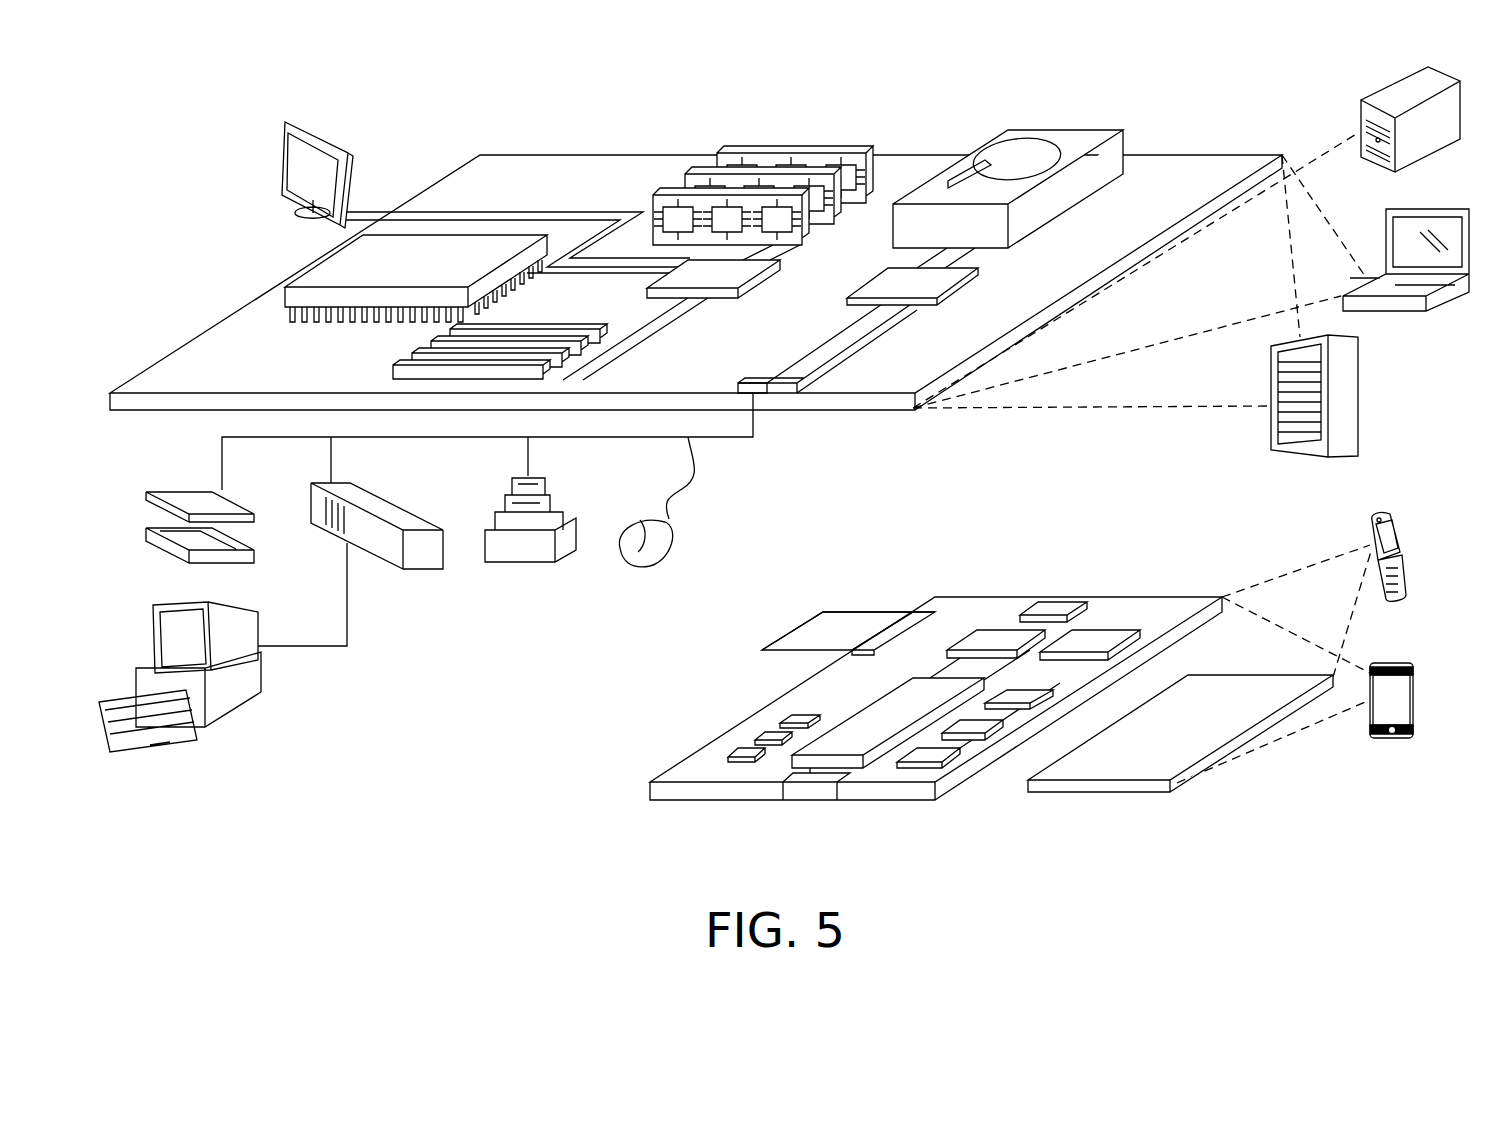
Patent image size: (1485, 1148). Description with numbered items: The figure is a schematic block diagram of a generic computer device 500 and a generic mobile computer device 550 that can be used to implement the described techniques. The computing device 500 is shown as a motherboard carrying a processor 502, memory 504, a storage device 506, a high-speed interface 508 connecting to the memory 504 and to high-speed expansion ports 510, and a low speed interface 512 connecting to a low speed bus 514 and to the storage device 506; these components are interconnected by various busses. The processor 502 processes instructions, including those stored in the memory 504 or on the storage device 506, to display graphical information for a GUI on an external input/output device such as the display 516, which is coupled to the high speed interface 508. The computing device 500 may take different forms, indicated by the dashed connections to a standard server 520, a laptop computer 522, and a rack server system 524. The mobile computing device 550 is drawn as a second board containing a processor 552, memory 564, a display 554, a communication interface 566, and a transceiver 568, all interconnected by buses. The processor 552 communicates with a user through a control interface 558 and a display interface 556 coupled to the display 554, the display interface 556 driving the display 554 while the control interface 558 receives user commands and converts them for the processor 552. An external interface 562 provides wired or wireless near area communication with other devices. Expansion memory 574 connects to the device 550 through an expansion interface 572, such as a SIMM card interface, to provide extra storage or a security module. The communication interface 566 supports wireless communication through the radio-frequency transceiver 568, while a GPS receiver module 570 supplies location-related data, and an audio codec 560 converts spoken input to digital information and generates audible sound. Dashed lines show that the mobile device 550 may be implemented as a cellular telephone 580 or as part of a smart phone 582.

The computing device 500 is at (430, 100).
The processor 502 is at (313, 265).
The memory 504 is at (800, 148).
The storage device 506 is at (1052, 130).
The high-speed interface 508 is at (726, 272).
The high-speed expansion ports 510 is at (420, 353).
The low speed interface 512 is at (883, 285).
The low speed bus 514 is at (760, 380).
The display 516 is at (286, 120).
The standard server 520 is at (1385, 97).
The laptop computer 522 is at (1447, 205).
The rack server system 524 is at (1360, 394).
The mobile computing device 550 is at (600, 808).
The processor 552 is at (853, 730).
The display 554 is at (1222, 693).
The display interface 556 is at (945, 760).
The control interface 558 is at (978, 728).
The audio codec 560 is at (1020, 698).
The external interface 562 is at (810, 790).
The memory 564 is at (762, 757).
The communication interface 566 is at (995, 632).
The transceiver 568 is at (1095, 640).
The GPS receiver module 570 is at (1050, 606).
The expansion interface 572 is at (913, 612).
The expansion memory 574 is at (824, 612).
The cellular telephone 580 is at (1378, 514).
The smart phone 582 is at (1385, 663).